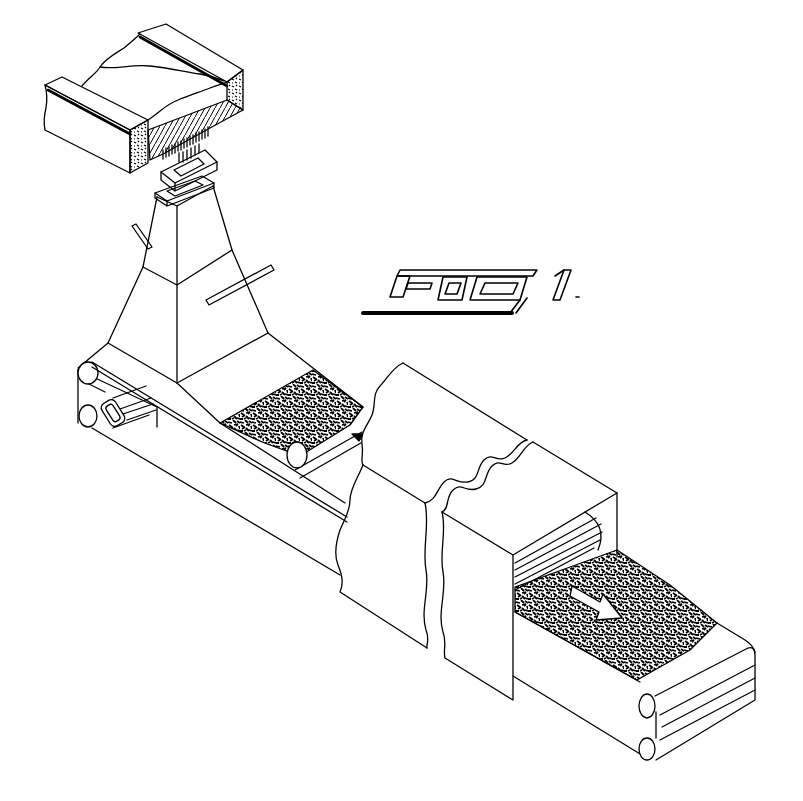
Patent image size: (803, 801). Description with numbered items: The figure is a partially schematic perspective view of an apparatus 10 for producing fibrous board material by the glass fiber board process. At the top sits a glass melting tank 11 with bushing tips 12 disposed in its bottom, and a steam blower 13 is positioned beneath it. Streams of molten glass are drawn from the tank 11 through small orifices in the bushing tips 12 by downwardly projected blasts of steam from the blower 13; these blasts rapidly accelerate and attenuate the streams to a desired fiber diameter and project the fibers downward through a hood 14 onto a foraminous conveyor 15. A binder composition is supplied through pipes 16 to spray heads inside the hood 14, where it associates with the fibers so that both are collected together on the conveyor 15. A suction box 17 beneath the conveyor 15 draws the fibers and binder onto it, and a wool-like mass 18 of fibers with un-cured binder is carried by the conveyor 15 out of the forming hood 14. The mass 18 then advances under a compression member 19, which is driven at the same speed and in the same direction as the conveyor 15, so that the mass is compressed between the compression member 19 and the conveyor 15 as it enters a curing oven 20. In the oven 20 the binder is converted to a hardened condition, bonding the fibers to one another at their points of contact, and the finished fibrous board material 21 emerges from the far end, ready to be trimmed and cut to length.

The apparatus 10 is at (282, 315).
The glass melting tank 11 is at (238, 67).
The bushing tips 12 is at (203, 145).
The steam blower 13 is at (218, 164).
The hood 14 is at (234, 221).
The foraminous conveyor 15 is at (102, 354).
The pipes 16 is at (137, 236).
The suction box 17 is at (168, 440).
The wool-like mass 18 is at (318, 376).
The compression member 19 is at (373, 381).
The curing oven 20 is at (468, 402).
The fibrous board material 21 is at (656, 574).